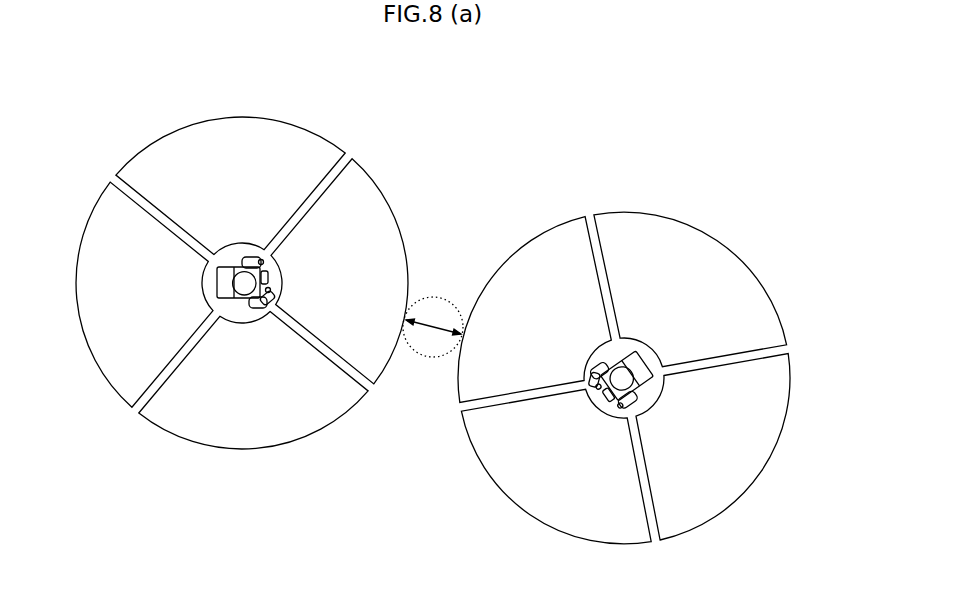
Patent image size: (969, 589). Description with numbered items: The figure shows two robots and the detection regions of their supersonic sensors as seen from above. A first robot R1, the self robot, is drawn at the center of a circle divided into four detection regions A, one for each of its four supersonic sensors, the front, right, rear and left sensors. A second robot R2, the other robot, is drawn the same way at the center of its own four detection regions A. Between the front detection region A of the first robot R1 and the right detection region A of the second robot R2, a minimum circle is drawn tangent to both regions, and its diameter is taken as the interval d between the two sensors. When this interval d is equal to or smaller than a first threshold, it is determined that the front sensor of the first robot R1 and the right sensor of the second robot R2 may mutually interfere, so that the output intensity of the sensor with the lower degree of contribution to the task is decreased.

The first robot R1 is at (232, 257).
The second robot R2 is at (643, 355).
The detection region A is at (278, 133).
The interval d is at (406, 318).